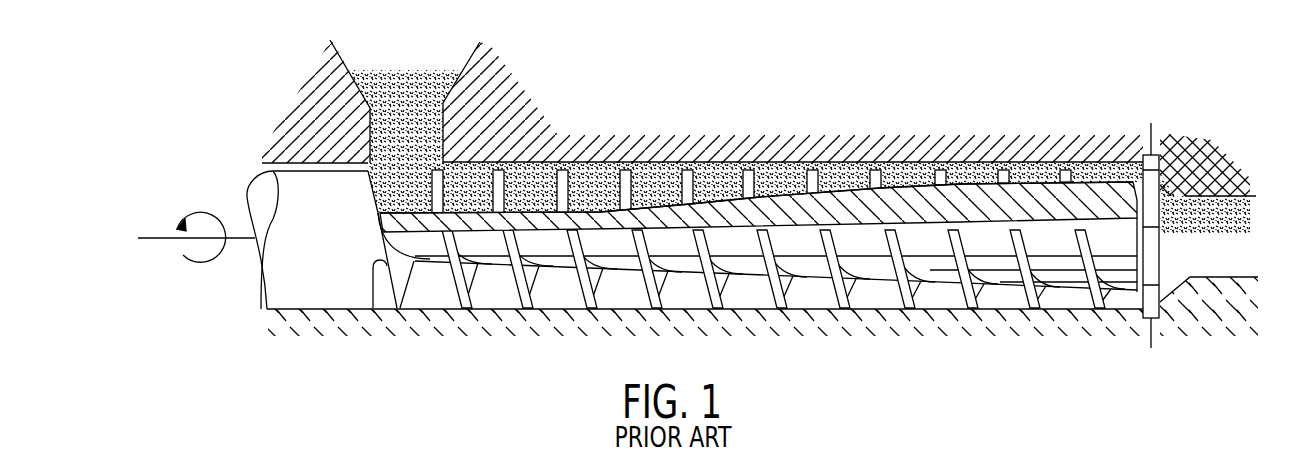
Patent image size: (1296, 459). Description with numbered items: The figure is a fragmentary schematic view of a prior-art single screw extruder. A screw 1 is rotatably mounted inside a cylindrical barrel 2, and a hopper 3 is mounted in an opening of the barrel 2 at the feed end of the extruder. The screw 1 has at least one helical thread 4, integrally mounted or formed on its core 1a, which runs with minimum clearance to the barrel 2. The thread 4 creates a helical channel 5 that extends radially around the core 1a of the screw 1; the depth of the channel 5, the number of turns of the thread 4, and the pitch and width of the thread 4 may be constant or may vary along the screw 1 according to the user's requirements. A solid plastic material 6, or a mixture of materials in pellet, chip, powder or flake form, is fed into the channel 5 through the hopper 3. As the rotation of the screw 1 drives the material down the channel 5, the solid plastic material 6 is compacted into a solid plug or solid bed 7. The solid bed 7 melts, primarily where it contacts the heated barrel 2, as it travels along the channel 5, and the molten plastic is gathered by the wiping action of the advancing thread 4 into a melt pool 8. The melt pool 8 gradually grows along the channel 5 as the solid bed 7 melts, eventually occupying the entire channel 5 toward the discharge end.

The screw 1 is at (951, 214).
The core 1a is at (742, 263).
The cylindrical barrel 2 is at (515, 156).
The hopper 3 is at (468, 64).
The helical thread 4 is at (543, 287).
The helical channel 5 is at (623, 292).
The solid plastic material 6 is at (392, 82).
The solid bed 7 is at (673, 195).
The melt pool 8 is at (651, 203).